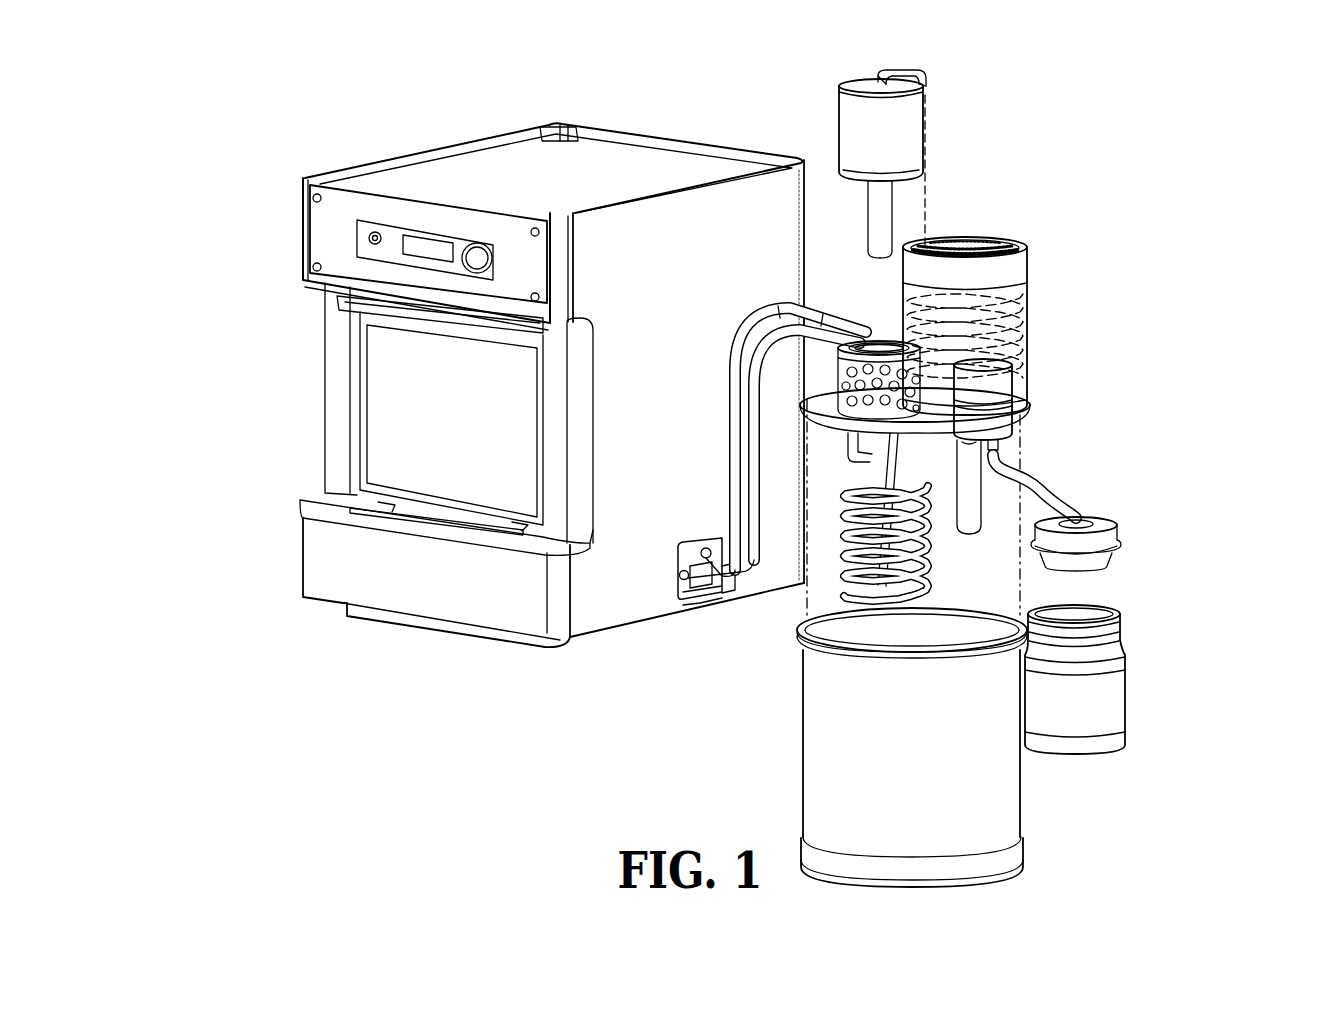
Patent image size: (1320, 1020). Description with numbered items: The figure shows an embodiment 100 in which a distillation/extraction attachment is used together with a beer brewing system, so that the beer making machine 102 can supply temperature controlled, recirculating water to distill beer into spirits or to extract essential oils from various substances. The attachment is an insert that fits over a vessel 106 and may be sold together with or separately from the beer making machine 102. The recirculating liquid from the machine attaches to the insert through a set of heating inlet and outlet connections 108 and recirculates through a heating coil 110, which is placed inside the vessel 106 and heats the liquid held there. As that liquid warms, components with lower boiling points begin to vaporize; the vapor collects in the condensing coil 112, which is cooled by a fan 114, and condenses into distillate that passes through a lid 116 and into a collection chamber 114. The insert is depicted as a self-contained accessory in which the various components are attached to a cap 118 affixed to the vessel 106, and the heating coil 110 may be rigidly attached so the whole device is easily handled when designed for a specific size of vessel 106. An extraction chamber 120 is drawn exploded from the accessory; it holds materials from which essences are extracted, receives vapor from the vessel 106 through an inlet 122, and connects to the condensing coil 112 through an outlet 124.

The embodiment 100 is at (332, 669).
The beer making machine 102 is at (373, 176).
The vessel 106 is at (1010, 807).
The heating inlet and outlet connections 108 is at (688, 600).
The heating coil 110 is at (900, 598).
The condensing coil 112 is at (1028, 298).
The fan 114 is at (1170, 690).
The lid 116 is at (1114, 533).
The cap 118 is at (1030, 406).
The extraction chamber 120 is at (838, 141).
The inlet 122 is at (868, 219).
The outlet 124 is at (930, 80).